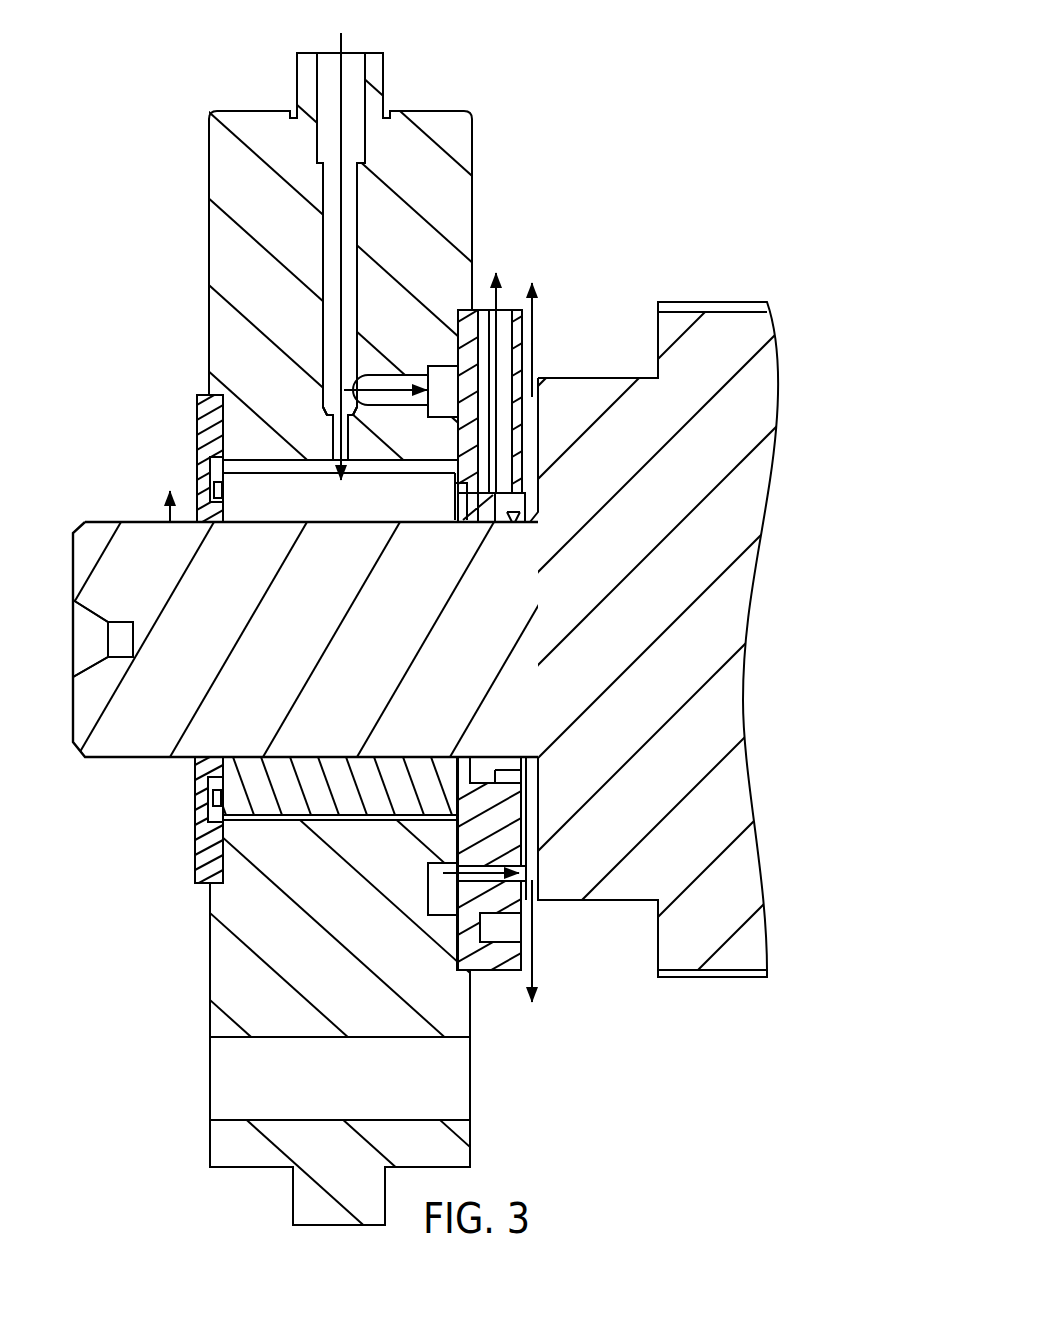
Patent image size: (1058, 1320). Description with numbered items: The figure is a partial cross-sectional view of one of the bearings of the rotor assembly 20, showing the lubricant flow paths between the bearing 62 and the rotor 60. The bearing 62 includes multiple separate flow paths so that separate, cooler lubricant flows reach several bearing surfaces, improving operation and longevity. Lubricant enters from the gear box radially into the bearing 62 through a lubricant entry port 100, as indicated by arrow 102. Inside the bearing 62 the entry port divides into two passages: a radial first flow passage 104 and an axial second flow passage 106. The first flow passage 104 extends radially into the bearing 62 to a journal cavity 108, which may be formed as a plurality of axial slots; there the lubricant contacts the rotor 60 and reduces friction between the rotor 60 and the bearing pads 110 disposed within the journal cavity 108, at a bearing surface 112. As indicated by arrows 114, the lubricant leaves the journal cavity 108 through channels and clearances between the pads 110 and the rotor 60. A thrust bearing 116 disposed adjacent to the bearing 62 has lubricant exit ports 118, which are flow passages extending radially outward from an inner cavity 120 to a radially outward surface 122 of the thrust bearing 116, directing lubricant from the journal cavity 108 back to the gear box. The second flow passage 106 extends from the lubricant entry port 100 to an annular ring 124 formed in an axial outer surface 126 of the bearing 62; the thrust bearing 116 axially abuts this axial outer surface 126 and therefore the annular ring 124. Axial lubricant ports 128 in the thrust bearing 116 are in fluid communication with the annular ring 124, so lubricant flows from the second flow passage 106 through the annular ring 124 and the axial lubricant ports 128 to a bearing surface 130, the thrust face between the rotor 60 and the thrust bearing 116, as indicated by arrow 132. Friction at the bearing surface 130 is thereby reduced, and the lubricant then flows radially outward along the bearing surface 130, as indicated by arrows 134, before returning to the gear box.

The rotor assembly 20 is at (606, 99).
The rotor 60 is at (722, 322).
The bearing 62 is at (230, 177).
The lubricant entry port 100 is at (297, 163).
The arrow 102 is at (340, 80).
The first flow passage 104 is at (353, 436).
The second flow passage 106 is at (383, 375).
The journal cavity 108 is at (272, 455).
The bearing pads 110 is at (252, 487).
The bearing surface 112 is at (328, 525).
The arrows 114 is at (498, 303).
The thrust bearing 116 is at (533, 957).
The lubricant exit ports 118 is at (487, 318).
The inner cavity 120 is at (528, 507).
The radially outward surface 122 is at (518, 308).
The annular ring 124 is at (447, 368).
The axial outer surface 126 is at (447, 933).
The axial lubricant ports 128 is at (492, 866).
The bearing surface 130 is at (541, 447).
The arrow 132 is at (447, 872).
The arrows 134 is at (533, 350).